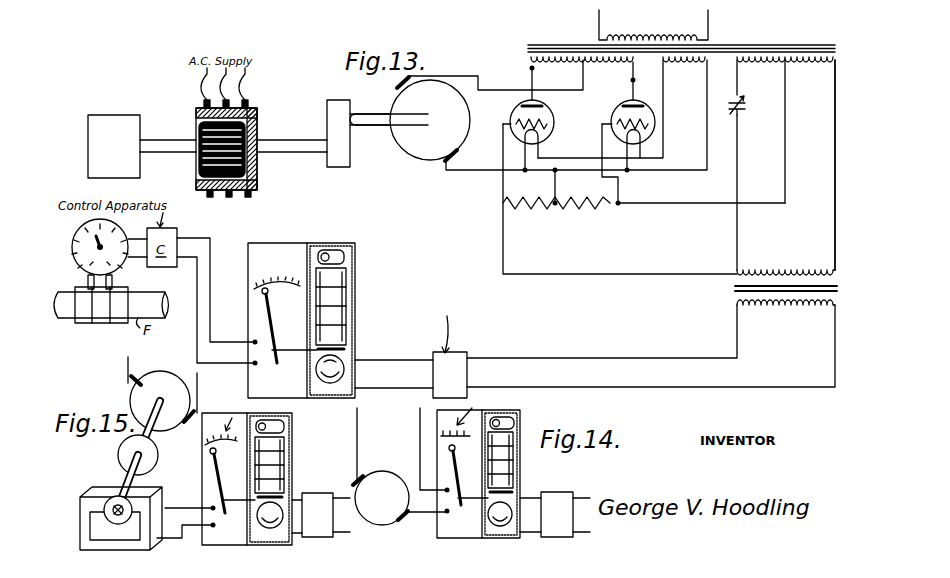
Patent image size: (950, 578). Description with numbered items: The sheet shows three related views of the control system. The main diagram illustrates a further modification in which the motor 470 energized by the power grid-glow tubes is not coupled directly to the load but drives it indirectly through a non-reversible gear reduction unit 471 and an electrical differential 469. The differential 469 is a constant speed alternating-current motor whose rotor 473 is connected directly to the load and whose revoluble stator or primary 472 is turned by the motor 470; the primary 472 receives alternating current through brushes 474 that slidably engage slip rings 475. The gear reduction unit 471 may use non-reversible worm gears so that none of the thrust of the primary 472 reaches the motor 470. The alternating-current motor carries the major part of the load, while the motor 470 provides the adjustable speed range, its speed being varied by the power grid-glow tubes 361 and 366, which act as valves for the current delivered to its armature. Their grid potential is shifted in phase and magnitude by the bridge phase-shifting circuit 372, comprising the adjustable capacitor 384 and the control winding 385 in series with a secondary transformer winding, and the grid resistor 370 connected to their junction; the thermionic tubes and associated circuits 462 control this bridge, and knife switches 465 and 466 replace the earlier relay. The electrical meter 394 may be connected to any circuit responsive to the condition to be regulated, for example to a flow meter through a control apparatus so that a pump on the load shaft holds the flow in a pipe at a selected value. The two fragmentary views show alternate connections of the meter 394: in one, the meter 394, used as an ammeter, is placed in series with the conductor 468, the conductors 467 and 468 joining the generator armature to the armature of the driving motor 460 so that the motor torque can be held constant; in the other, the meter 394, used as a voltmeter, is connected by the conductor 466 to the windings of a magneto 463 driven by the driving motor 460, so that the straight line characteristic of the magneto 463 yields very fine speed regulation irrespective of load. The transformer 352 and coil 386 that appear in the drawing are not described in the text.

In FIG. 13, the differential 469 is at (178, 128).
In FIG. 13, the revoluble primary 472 is at (257, 168).
In FIG. 13, the rotor 473 is at (197, 162).
In FIG. 13, the brushes 474 is at (232, 80).
In FIG. 13, the slip rings 475 is at (250, 103).
In FIG. 13, the non-reversible gear reduction unit 471 is at (346, 166).
In FIG. 13, the motor 470 is at (410, 119).
In FIG. 13, the transformer 352 is at (762, 43).
In FIG. 13, the bridge phase-shifting circuit 372 is at (825, 127).
In FIG. 13, the adjustable capacitor 384 is at (744, 104).
In FIG. 13, the knife switch 465 is at (530, 70).
In FIG. 13, the power grid-glow tube 361 is at (588, 116).
In FIG. 13, the power grid-glow tube 366 is at (624, 97).
In FIG. 13, the knife switch 466 is at (634, 79).
In FIG. 15, the knife switch 466 is at (194, 524).
In FIG. 13, the grid resistor 370 is at (590, 192).
In FIG. 13, the control winding 385 is at (799, 271).
In FIG. 13, the coil 386 is at (775, 305).
In FIG. 13, the electrical meter 394 is at (301, 312).
In FIG. 15, the electrical meter 394 is at (240, 545).
In FIG. 14, the electrical meter 394 is at (501, 543).
In FIG. 13, the thermionic tubes and associated circuits 462 is at (467, 352).
In FIG. 15, the thermionic tubes and associated circuits 462 is at (316, 503).
In FIG. 14, the thermionic tubes and associated circuits 462 is at (556, 502).
In FIG. 15, the driving motor 460 is at (110, 463).
In FIG. 14, the driving motor 460 is at (395, 548).
In FIG. 15, the magneto 463 is at (84, 493).
In FIG. 14, the conductor 467 is at (357, 432).
In FIG. 14, the conductor 468 is at (420, 465).